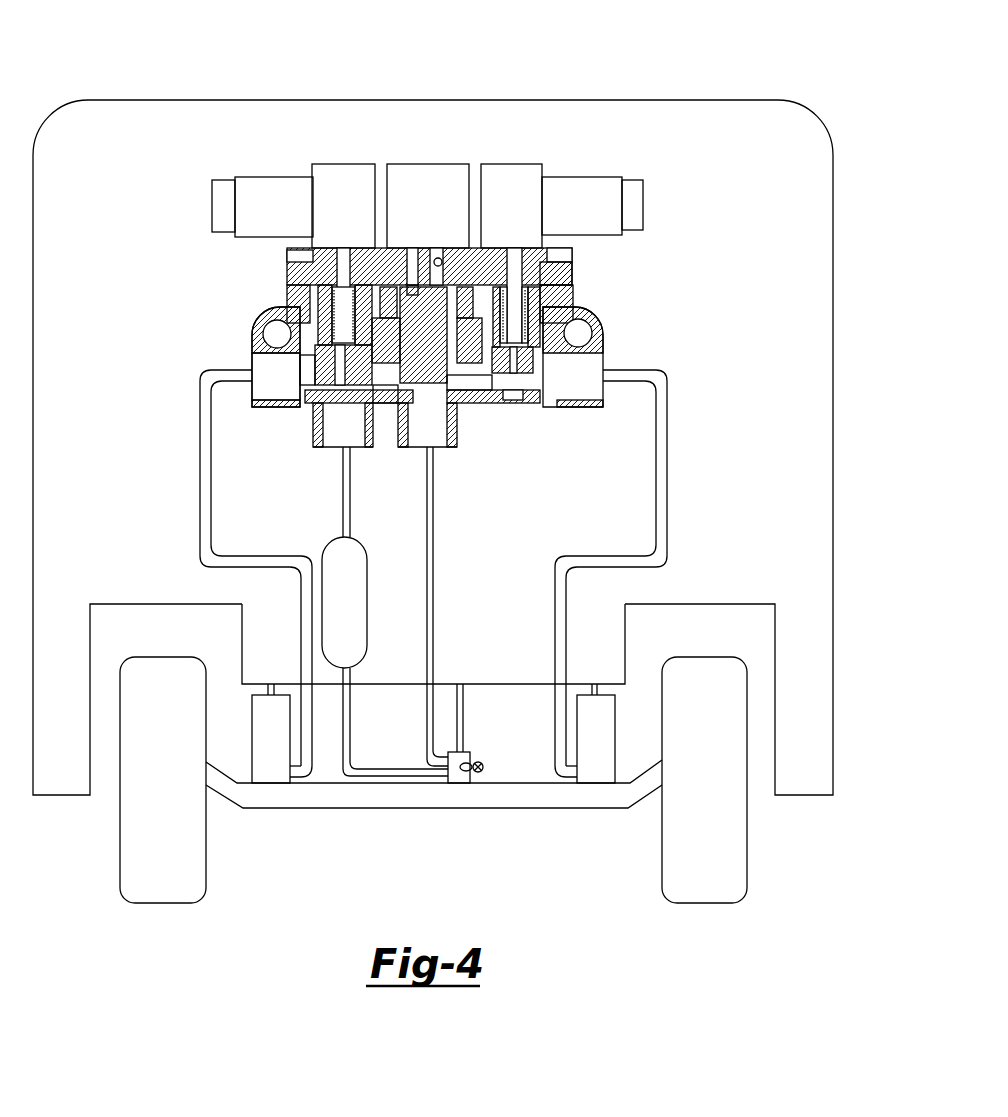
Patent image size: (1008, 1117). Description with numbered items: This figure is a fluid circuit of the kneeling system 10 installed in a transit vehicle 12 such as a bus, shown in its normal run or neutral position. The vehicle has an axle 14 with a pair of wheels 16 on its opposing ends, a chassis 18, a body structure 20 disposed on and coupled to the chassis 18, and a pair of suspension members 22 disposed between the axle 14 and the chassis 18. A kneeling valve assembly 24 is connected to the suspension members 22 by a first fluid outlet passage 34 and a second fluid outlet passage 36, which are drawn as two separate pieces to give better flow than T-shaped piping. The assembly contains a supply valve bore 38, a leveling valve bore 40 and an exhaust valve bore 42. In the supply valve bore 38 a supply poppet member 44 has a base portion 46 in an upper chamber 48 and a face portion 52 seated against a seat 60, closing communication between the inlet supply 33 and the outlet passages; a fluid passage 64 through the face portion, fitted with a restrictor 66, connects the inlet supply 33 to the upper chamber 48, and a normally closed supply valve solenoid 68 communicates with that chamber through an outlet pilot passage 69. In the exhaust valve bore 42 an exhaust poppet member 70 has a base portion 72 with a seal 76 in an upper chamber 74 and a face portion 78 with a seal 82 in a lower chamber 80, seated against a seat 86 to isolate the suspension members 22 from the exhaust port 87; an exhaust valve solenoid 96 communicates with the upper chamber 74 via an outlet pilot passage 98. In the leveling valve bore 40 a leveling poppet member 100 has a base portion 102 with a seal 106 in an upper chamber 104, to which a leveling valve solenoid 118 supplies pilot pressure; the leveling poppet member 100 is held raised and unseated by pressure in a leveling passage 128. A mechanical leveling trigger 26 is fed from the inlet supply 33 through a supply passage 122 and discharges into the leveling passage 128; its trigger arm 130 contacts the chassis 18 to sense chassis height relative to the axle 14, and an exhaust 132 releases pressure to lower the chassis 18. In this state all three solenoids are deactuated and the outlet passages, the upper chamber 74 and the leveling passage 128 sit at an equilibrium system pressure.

The kneeling system 10 is at (595, 60).
The transit vehicle 12 is at (485, 99).
The axle 14 is at (575, 808).
The wheels 16 is at (120, 860).
The chassis 18 is at (240, 642).
The body structure 20 is at (833, 247).
The suspension members 22 is at (252, 737).
The kneeling valve assembly 24 is at (672, 229).
The mechanical leveling trigger 26 is at (470, 755).
The inlet supply 33 is at (368, 590).
The first fluid outlet passage 34 is at (217, 372).
The second fluid outlet passage 36 is at (644, 372).
The supply valve bore 38 is at (307, 322).
The leveling valve bore 40 is at (462, 275).
The exhaust valve bore 42 is at (585, 325).
The supply poppet member 44 is at (287, 297).
The base portion 46 is at (363, 270).
The upper chamber 48 is at (312, 260).
The face portion 52 is at (303, 400).
The seat 60 is at (348, 383).
The fluid passage 64 is at (278, 390).
The restrictor 66 is at (317, 357).
The supply valve solenoid 68 is at (353, 164).
The outlet pilot passage 69 is at (323, 248).
The exhaust poppet member 70 is at (563, 313).
The base portion 72 is at (490, 277).
The upper chamber 74 is at (545, 293).
The seal 76 is at (574, 307).
The face portion 78 is at (523, 400).
The lower chamber 80 is at (477, 390).
The seal 82 is at (581, 336).
The seat 86 is at (543, 387).
The exhaust port 87 is at (510, 400).
The exhaust valve solenoid 96 is at (511, 164).
The outlet pilot passage 98 is at (530, 283).
The leveling poppet member 100 is at (452, 386).
The base portion 102 is at (403, 390).
The upper chamber 104 is at (422, 252).
The seal 106 is at (387, 287).
The leveling valve solenoid 118 is at (439, 164).
The supply passage 122 is at (350, 735).
The leveling passage 128 is at (433, 552).
The trigger arm 130 is at (463, 697).
The exhaust 132 is at (478, 775).